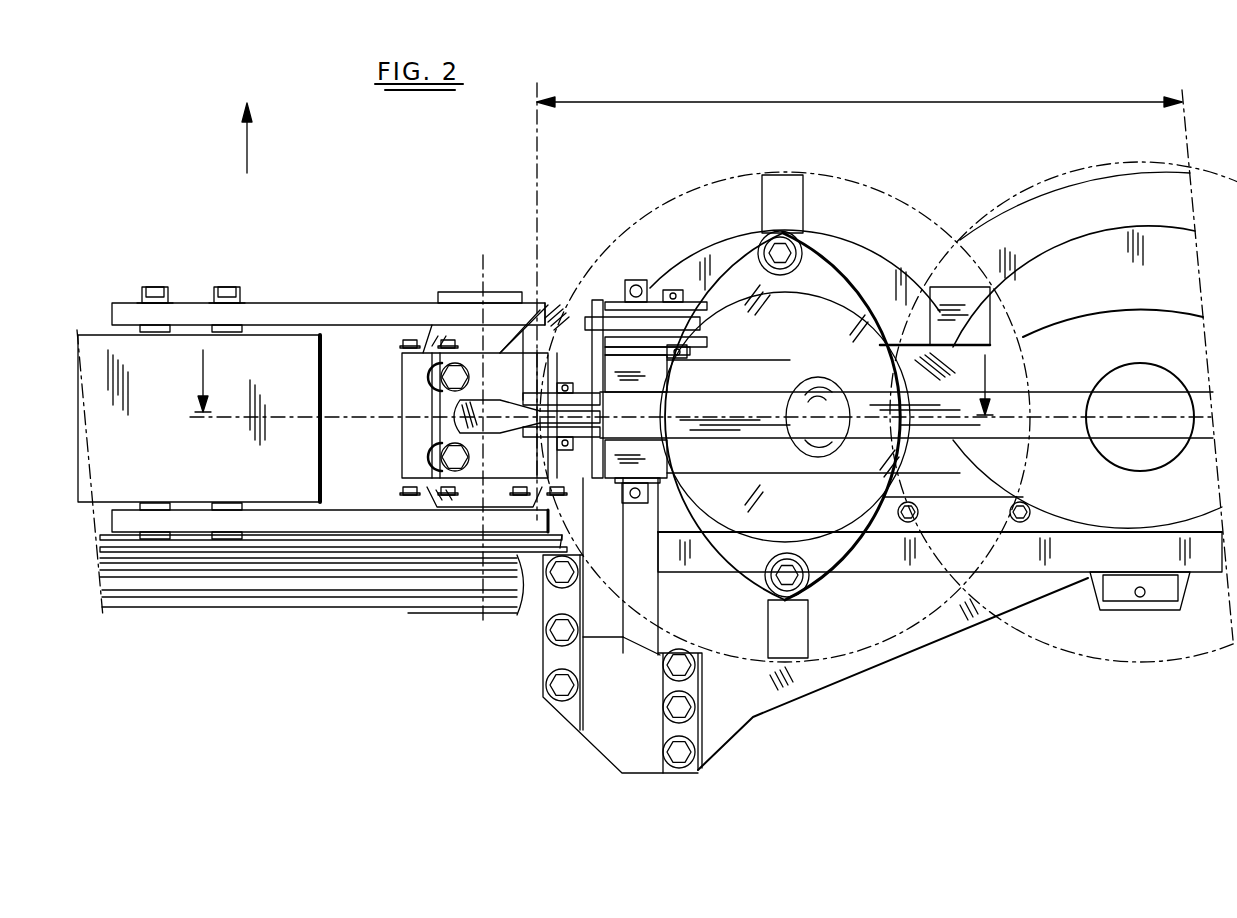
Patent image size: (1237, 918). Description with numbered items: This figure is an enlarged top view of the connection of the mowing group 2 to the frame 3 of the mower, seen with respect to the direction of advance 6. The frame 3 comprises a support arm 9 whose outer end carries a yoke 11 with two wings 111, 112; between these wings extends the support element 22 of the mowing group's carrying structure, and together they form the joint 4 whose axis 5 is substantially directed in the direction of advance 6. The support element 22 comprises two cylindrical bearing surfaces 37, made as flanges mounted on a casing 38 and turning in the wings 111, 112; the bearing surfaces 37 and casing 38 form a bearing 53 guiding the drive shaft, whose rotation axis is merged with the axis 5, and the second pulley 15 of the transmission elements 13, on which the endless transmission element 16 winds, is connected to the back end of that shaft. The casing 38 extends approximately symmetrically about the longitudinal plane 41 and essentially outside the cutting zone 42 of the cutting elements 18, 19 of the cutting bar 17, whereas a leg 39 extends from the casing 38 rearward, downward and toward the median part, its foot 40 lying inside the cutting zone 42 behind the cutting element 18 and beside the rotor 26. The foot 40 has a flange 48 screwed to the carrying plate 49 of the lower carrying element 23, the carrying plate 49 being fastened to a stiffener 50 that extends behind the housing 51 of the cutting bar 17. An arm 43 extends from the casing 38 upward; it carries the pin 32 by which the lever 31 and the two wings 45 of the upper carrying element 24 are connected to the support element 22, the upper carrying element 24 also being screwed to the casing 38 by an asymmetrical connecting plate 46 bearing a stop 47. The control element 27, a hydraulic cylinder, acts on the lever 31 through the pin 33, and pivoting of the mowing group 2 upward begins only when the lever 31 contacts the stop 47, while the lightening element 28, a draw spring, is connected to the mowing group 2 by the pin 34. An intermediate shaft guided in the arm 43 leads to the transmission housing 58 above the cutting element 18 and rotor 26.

The mowing group 2 is at (953, 215).
The frame 3 is at (99, 320).
The joint 4 is at (501, 287).
The axis 5 is at (484, 305).
The direction of advance 6 is at (246, 152).
The support arm 9 is at (303, 360).
The yoke 11 is at (344, 300).
The transmission elements 13 is at (146, 622).
The second pulley 15 is at (425, 615).
The endless transmission element 16 is at (300, 547).
The cutting bar 17 is at (930, 483).
The cutting element 18 is at (833, 273).
The cutting element 19 is at (1147, 322).
The support element 22 is at (592, 588).
The lower carrying element 23 is at (1027, 590).
The upper carrying element 24 is at (1055, 398).
The rotor 26 is at (883, 347).
The control element 27 is at (594, 317).
The lightening element 28 is at (507, 428).
The lever 31 is at (703, 300).
The pin 32 is at (643, 280).
The pin 33 is at (665, 290).
The pin 34 is at (562, 387).
The cylindrical bearing surfaces 37 is at (457, 297).
The casing 38 is at (405, 383).
The leg 39 is at (645, 593).
The foot 40 is at (605, 733).
The longitudinal plane 41 is at (303, 419).
The cutting zone 42 is at (912, 102).
The arm 43 is at (675, 478).
The wings 45 is at (655, 368).
The connecting plate 46 is at (450, 428).
The stop 47 is at (585, 305).
The flange 48 is at (692, 732).
The carrying plate 49 is at (818, 673).
The stiffener 50 is at (1208, 560).
The housing 51 is at (953, 347).
The bearing 53 is at (407, 312).
The transmission housing 58 is at (787, 463).
The wing 111 is at (287, 310).
The wing 112 is at (360, 515).